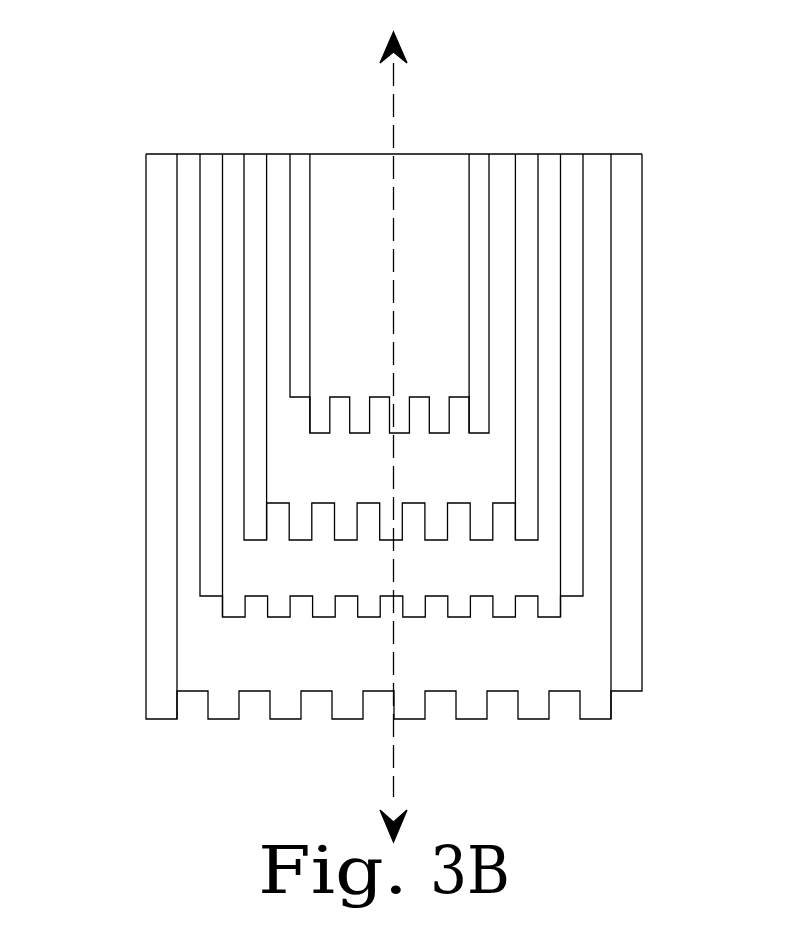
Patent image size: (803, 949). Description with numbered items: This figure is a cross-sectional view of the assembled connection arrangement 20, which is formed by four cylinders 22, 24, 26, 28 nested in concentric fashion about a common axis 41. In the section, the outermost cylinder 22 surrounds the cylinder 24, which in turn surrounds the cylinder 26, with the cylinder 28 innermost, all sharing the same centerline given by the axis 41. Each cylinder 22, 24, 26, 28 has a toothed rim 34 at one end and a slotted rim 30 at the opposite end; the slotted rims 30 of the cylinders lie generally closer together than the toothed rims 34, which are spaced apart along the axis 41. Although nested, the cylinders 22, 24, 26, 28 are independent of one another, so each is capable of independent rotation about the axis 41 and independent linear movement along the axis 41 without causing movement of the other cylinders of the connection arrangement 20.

The connection arrangement 20 is at (165, 93).
The cylinder 22 is at (160, 206).
The cylinder 24 is at (212, 178).
The cylinder 26 is at (254, 178).
The cylinder 28 is at (302, 180).
The slotted rim 30 is at (309, 178).
The toothed rim 34 is at (318, 424).
The axis 41 is at (393, 778).